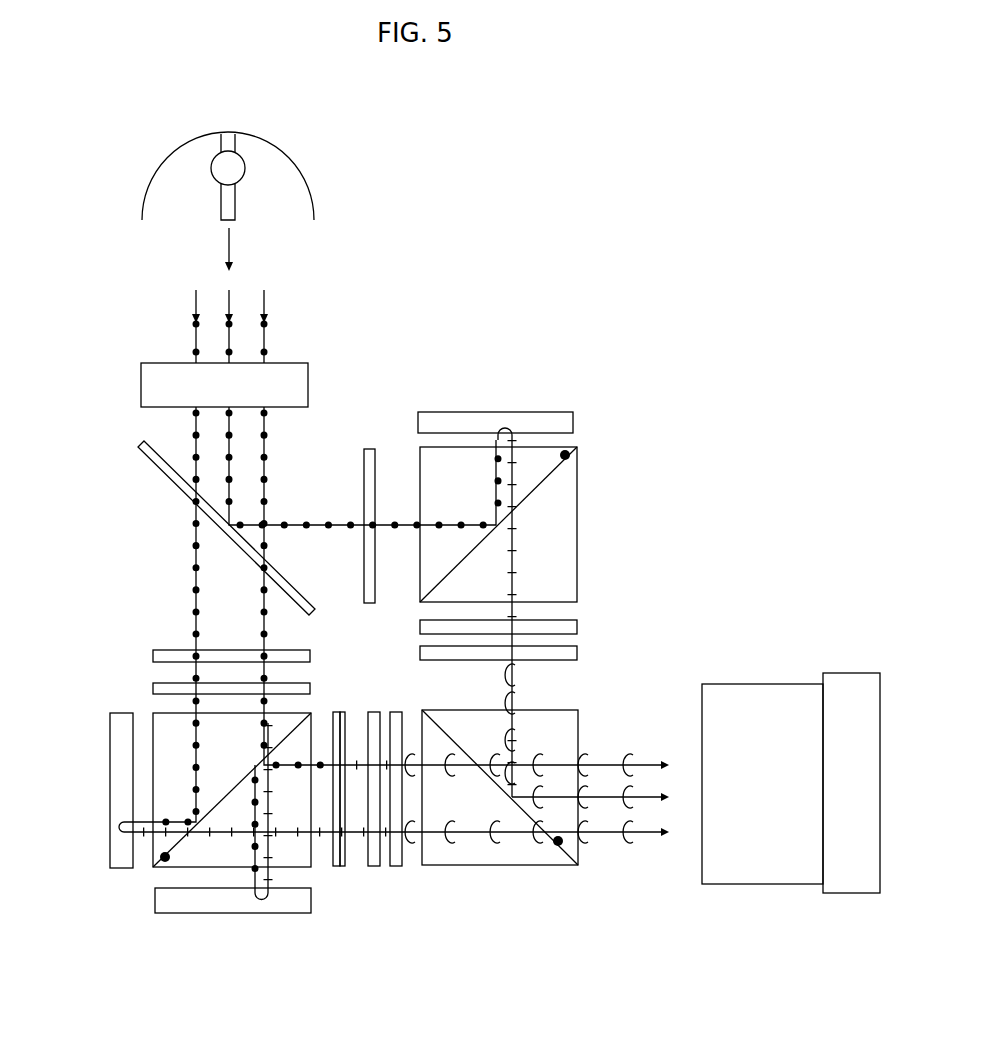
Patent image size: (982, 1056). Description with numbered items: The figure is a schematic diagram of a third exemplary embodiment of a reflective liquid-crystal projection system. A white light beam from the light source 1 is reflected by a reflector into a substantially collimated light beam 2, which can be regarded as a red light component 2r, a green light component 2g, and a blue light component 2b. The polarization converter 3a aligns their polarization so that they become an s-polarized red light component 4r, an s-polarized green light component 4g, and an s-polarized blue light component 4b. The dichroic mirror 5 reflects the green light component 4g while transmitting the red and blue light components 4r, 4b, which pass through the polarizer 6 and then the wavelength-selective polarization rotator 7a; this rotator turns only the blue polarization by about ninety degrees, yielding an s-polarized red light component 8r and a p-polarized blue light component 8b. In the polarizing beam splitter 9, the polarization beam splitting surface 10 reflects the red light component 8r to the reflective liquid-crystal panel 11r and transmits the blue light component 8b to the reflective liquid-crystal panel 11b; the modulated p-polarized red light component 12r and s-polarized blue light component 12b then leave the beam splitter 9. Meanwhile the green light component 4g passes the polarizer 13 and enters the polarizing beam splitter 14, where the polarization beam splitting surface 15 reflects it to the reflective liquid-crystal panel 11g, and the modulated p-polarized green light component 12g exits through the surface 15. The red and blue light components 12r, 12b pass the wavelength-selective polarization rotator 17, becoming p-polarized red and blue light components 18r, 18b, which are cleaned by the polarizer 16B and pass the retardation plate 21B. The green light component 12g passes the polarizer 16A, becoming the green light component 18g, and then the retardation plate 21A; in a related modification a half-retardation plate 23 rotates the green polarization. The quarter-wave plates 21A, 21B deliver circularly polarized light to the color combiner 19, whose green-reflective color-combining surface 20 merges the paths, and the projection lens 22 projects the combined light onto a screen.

The light source 1 is at (230, 166).
The collimated light beam 2 is at (232, 250).
The red light component 2r is at (193, 300).
The green light component 2g is at (232, 297).
The blue light component 2b is at (265, 305).
The polarization converter 3a is at (150, 384).
The s-polarized red light component 4r is at (195, 437).
The s-polarized green light component 4g is at (232, 437).
The s-polarized blue light component 4b is at (268, 440).
The dichroic mirror 5 is at (147, 457).
The polarizer 6 is at (165, 650).
The wavelength-selective polarization rotator 7a is at (158, 683).
The s-polarized red light component 8r is at (197, 725).
The p-polarized blue light component 8b is at (273, 702).
The polarizing beam splitter 9 is at (165, 727).
The polarization beam splitting surface 10 is at (165, 858).
The reflective liquid-crystal panel 11r is at (118, 793).
The reflective liquid-crystal panel 11b is at (233, 903).
The reflective liquid-crystal panel 11g is at (475, 420).
The p-polarized red light component 12r is at (323, 845).
The s-polarized blue light component 12b is at (322, 763).
The p-polarized green light component 12g is at (510, 535).
The polarizer 13 is at (372, 448).
The polarizing beam splitter 14 is at (415, 590).
The polarization beam splitting surface 15 is at (565, 452).
The polarizer 16A is at (578, 626).
The retardation plate 21A is at (578, 652).
The p-polarized green light component 18g is at (512, 640).
The wavelength-selective polarization rotator 17 is at (337, 867).
The p-polarized red light component 18r is at (352, 867).
The p-polarized blue light component 18b is at (348, 766).
The polarizer 16B is at (375, 867).
The retardation plate 21B is at (396, 867).
The color combiner 19 is at (487, 866).
The color-combining surface 20 is at (558, 843).
The projection lens 22 is at (773, 692).
The half-retardation plate 23 is at (410, 760).